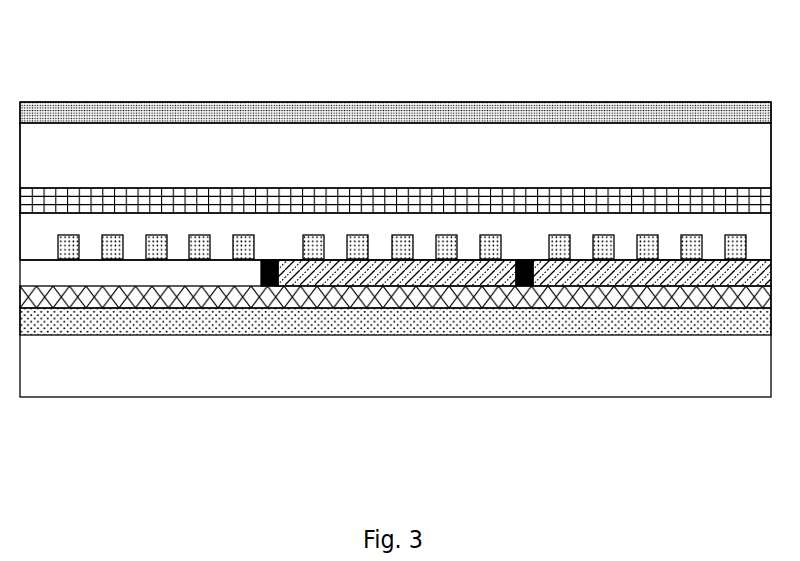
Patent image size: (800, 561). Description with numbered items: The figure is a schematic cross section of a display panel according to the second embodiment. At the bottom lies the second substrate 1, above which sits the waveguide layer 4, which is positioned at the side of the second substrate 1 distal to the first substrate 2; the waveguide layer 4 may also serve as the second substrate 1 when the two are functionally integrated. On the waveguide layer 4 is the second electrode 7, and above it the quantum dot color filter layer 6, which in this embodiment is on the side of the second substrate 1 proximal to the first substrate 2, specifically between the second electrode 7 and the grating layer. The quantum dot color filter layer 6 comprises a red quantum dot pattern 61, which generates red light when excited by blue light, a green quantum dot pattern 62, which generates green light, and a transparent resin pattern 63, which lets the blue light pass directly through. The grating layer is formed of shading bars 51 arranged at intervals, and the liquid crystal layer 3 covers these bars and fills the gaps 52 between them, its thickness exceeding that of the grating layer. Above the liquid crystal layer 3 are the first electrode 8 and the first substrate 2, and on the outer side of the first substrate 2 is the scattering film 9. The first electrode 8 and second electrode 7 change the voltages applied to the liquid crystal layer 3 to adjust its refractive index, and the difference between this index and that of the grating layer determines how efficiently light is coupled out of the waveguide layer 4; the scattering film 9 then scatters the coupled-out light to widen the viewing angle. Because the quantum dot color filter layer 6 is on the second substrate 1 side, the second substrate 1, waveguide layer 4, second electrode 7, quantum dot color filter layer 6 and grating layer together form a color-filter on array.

The second substrate 1 is at (660, 370).
The first substrate 2 is at (709, 143).
The liquid crystal layer 3 is at (618, 230).
The waveguide layer 4 is at (597, 320).
The shading bars 51 is at (447, 256).
The gaps 52 is at (373, 255).
The quantum dot color filter layer 6 is at (613, 55).
The red quantum dot pattern 61 is at (540, 272).
The green quantum dot pattern 62 is at (398, 273).
The transparent resin pattern 63 is at (213, 280).
The second electrode 7 is at (280, 300).
The first electrode 8 is at (120, 205).
The scattering film 9 is at (94, 116).